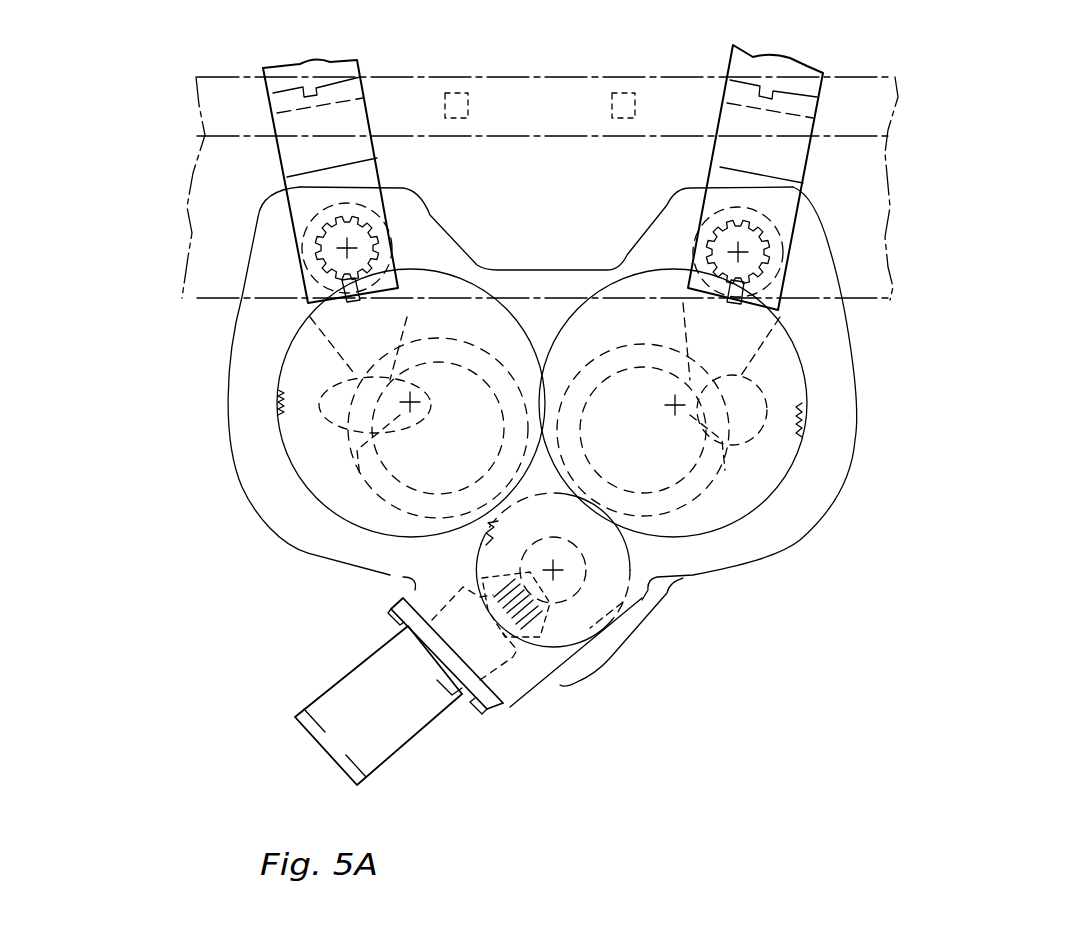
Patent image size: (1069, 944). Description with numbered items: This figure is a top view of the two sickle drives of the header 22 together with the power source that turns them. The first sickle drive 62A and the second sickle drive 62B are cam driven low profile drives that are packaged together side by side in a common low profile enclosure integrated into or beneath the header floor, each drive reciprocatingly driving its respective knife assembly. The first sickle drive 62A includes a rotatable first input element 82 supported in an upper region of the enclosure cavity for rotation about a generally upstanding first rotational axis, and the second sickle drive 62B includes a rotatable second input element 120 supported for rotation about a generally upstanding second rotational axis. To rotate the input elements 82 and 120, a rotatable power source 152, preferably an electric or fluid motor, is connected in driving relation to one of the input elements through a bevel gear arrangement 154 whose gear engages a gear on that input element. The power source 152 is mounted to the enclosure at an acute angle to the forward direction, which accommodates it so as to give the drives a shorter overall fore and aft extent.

The header 22 is at (982, 107).
The first sickle drive 62A is at (811, 163).
The second sickle drive 62B is at (283, 158).
The first input element 82 is at (737, 520).
The second input element 120 is at (340, 513).
The power source 152 is at (423, 732).
The bevel gear arrangement 154 is at (610, 658).